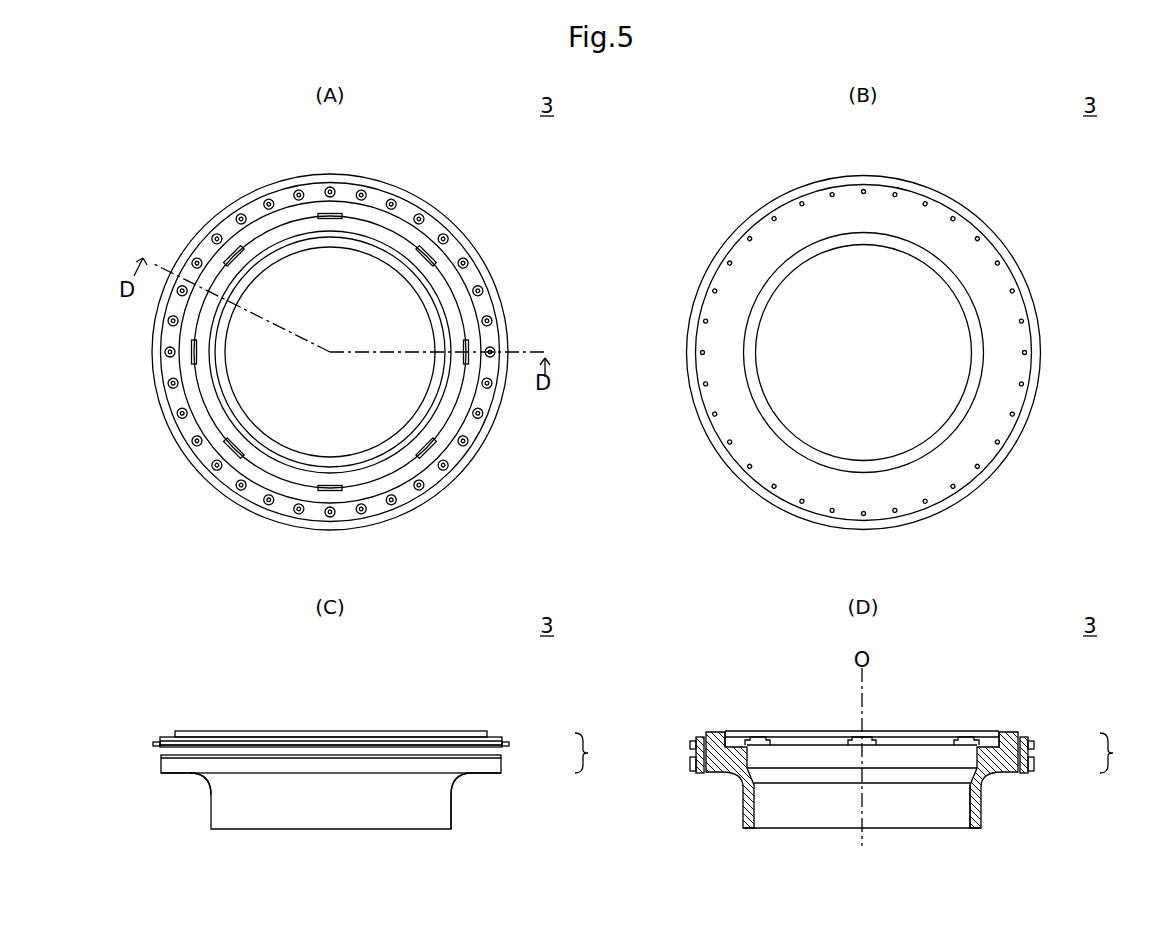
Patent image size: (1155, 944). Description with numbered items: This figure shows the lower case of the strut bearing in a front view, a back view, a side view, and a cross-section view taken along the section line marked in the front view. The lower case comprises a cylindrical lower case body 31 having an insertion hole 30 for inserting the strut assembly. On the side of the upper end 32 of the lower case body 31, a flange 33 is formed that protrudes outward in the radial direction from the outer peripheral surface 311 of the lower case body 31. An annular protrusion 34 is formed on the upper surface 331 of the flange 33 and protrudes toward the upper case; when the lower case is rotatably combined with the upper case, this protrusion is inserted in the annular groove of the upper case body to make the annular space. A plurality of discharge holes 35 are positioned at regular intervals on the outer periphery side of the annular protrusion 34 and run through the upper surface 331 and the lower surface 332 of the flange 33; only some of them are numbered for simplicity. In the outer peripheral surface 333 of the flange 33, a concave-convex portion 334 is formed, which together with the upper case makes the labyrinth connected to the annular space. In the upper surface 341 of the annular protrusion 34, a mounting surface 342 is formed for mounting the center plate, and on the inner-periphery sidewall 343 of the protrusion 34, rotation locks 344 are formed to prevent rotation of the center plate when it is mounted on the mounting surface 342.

The insertion hole 30 is at (328, 306).
The lower case body 31 is at (481, 243).
The outer peripheral surface 311 is at (455, 812).
The upper end 32 is at (864, 753).
The flange 33 is at (150, 726).
The upper surface 331 is at (165, 737).
The lower surface 332 is at (984, 432).
The outer peripheral surface 333 is at (161, 764).
The concave-convex portion 334 is at (160, 745).
The annular protrusion 34 is at (341, 731).
The upper surface 341 is at (452, 436).
The mounting surface 342 is at (735, 745).
The inner-periphery sidewall 343 is at (749, 745).
The rotation locks 344 is at (212, 472).
The discharge holes 35 is at (489, 323).